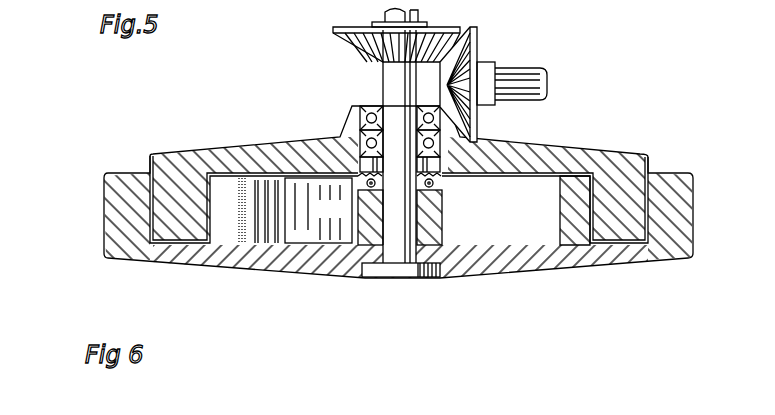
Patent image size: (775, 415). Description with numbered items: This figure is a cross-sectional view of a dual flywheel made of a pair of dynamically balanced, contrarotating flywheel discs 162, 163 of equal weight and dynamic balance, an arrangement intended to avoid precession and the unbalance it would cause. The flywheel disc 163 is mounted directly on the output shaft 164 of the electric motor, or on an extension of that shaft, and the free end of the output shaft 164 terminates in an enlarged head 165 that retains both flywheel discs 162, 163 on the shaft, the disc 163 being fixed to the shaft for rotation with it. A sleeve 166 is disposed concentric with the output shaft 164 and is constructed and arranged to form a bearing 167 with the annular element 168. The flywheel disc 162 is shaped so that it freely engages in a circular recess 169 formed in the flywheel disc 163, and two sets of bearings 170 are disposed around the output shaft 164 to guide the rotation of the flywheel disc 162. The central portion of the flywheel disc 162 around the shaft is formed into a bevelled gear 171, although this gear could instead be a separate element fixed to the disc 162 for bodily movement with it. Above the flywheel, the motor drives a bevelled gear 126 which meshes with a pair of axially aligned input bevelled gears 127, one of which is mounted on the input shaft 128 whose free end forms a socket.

The bevelled gear 126 is at (332, 30).
The input bevelled gears 127 is at (480, 43).
The input shaft 128 is at (542, 68).
The flywheel disc 162 is at (613, 150).
The flywheel disc 163 is at (679, 200).
The output shaft 164 is at (384, 78).
The enlarged head 165 is at (352, 290).
The sleeve 166 is at (442, 230).
The bearing 167 is at (447, 184).
The annular element 168 is at (340, 210).
The circular recess 169 is at (150, 163).
The bearings 170 is at (362, 140).
The bevelled gear 171 is at (360, 128).